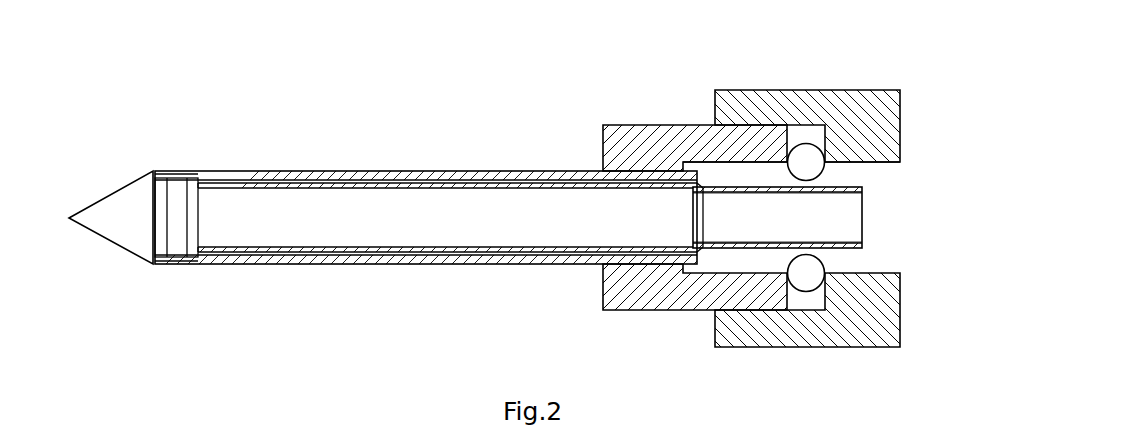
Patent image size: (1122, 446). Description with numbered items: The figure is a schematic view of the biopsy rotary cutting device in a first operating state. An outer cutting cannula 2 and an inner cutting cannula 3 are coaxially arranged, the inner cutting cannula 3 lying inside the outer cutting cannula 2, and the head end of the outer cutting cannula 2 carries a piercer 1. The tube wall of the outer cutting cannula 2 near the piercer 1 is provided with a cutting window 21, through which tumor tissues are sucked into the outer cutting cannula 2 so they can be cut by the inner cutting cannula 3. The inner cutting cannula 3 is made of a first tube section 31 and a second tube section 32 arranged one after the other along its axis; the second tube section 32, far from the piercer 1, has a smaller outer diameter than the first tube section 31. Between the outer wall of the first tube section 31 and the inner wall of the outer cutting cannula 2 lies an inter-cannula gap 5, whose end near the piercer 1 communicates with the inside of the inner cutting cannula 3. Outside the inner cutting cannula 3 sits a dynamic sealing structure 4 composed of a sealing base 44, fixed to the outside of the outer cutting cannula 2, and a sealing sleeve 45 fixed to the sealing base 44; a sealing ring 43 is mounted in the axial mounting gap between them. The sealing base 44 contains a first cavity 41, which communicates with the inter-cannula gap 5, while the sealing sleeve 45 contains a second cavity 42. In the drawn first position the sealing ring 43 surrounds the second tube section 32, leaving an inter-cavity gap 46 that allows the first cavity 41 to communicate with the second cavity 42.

The piercer 1 is at (122, 215).
The cutting window 21 is at (230, 172).
The outer cutting cannula 2 is at (350, 172).
The first tube section 31 is at (422, 184).
The inter-cannula gap 5 is at (501, 183).
The dynamic sealing structure 4 is at (776, 183).
The sealing base 44 is at (672, 143).
The first cavity 41 is at (749, 177).
The sealing ring 43 is at (806, 165).
The sealing sleeve 45 is at (857, 122).
The second cavity 42 is at (840, 172).
The inner cutting cannula 3 is at (866, 215).
The inter-cavity gap 46 is at (806, 253).
The second tube section 32 is at (752, 235).